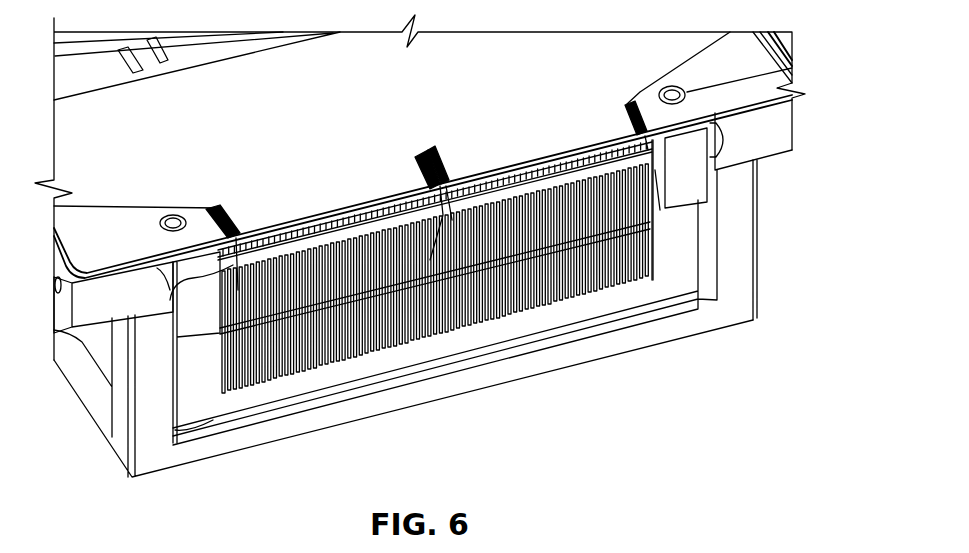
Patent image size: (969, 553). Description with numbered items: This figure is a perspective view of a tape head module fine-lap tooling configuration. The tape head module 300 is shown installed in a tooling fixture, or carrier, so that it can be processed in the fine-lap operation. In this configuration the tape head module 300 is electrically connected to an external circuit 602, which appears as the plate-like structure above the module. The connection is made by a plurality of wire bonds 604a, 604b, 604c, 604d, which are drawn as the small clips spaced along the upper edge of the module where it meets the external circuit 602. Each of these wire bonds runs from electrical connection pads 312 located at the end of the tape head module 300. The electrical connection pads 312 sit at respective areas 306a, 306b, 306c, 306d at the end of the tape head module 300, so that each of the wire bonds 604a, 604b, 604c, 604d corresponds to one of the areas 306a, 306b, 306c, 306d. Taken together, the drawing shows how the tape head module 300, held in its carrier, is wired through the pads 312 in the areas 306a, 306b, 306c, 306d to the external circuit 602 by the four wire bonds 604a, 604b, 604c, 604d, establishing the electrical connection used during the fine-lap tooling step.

The external circuit 602 is at (208, 153).
The tape head module 300 is at (300, 245).
The electrical connection pads 312 is at (233, 253).
The wire bond 604a is at (232, 212).
The wire bond 604b is at (428, 181).
The wire bond 604c is at (458, 154).
The wire bond 604d is at (624, 111).
The area 306a is at (172, 300).
The area 306b is at (505, 212).
The area 306c is at (430, 220).
The area 306d is at (666, 208).